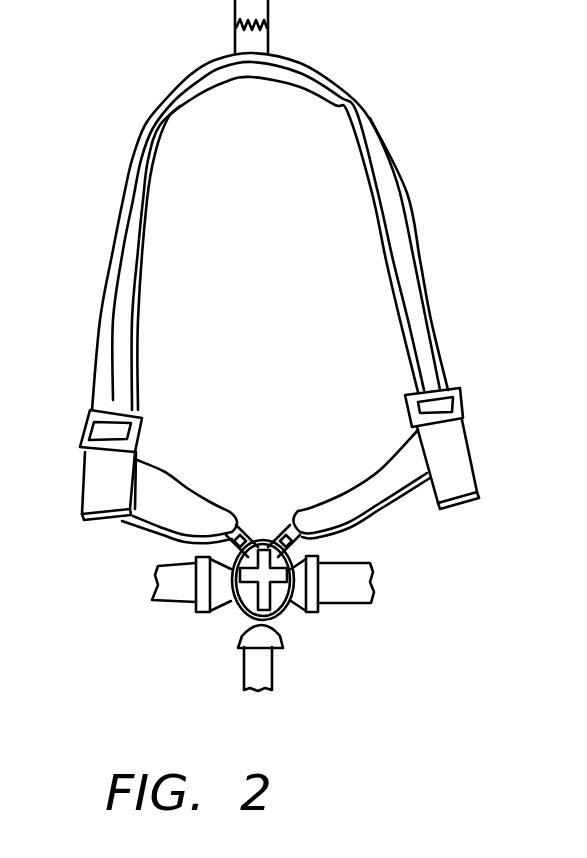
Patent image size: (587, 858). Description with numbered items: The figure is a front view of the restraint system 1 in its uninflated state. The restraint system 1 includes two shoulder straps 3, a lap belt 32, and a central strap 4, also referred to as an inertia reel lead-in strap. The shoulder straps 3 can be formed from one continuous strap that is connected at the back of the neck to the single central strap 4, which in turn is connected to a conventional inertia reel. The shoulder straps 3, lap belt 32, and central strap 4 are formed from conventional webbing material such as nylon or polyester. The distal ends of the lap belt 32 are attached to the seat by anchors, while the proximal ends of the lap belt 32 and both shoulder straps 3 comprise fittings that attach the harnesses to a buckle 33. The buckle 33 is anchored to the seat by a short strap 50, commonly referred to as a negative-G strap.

The restraint system 1 is at (386, 202).
The shoulder straps 3 is at (110, 358).
The central strap 4 is at (260, 41).
The lap belt 32 is at (358, 609).
The buckle 33 is at (240, 613).
The short strap 50 is at (258, 668).